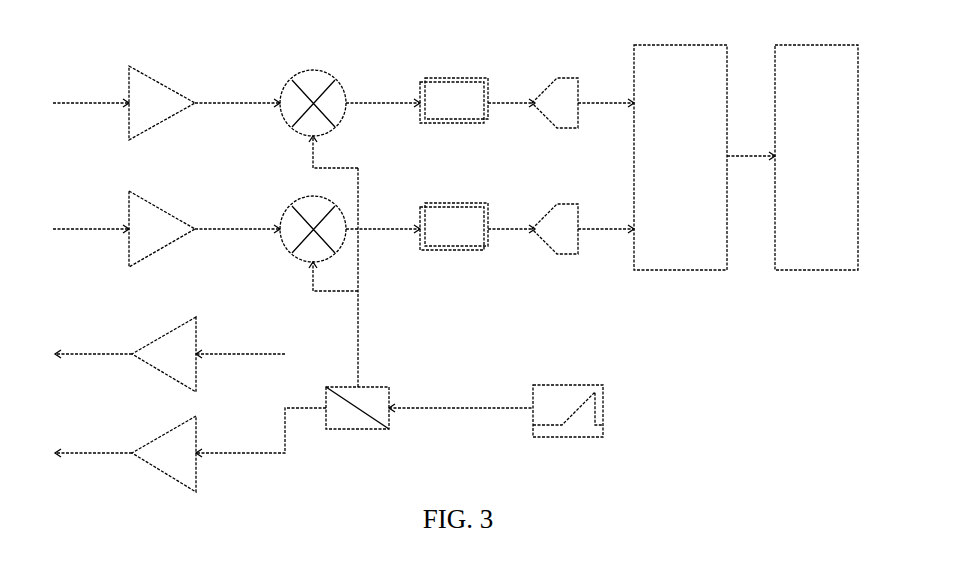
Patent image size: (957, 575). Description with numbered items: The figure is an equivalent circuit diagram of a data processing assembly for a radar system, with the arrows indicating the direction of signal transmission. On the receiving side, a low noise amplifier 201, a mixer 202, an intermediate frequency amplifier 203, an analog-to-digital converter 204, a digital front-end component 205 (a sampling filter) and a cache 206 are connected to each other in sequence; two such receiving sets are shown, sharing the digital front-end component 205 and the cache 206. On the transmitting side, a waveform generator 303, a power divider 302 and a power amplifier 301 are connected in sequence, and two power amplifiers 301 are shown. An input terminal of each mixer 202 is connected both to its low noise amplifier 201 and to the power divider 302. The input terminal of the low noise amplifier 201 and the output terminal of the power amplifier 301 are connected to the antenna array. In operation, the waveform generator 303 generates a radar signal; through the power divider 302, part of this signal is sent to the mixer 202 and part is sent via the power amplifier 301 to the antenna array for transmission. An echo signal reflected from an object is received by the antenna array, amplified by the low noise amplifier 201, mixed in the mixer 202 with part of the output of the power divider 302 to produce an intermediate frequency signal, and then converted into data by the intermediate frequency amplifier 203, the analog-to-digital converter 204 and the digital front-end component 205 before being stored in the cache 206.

The low noise amplifier 201 is at (148, 73).
The mixer 202 is at (313, 69).
The intermediate frequency amplifier 203 is at (465, 73).
The analog-to-digital converter 204 is at (575, 73).
The digital front-end component 205 is at (678, 45).
The cache 206 is at (815, 45).
The power amplifier 301 is at (200, 322).
The power divider 302 is at (385, 385).
The waveform generator 303 is at (572, 385).